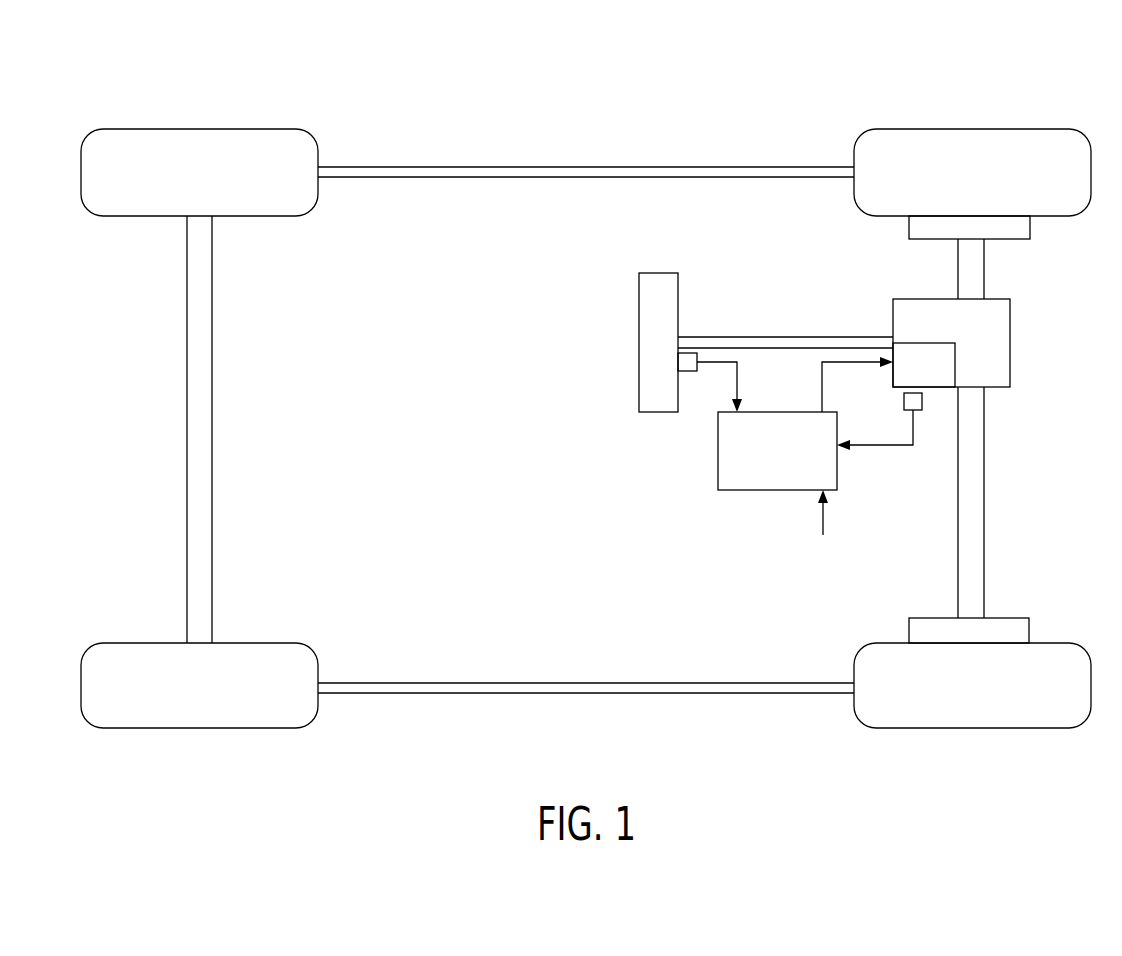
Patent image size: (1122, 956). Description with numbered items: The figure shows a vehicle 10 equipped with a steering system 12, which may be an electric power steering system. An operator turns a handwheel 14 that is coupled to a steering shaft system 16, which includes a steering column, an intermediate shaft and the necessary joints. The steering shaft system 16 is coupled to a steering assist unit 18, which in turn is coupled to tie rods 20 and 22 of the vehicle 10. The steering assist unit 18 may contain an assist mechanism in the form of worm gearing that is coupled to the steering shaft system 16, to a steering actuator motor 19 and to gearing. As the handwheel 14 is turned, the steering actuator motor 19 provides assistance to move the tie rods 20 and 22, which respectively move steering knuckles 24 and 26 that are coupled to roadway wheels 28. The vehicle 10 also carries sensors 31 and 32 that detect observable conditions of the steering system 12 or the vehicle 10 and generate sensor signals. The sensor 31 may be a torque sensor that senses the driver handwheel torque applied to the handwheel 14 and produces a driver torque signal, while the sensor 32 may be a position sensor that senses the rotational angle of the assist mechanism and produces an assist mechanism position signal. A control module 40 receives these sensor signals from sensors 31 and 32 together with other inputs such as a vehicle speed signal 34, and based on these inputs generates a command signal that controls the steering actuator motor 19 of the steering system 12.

The vehicle 10 is at (915, 97).
The steering system 12 is at (748, 292).
The handwheel 14 is at (659, 272).
The steering shaft system 16 is at (836, 336).
The steering assist unit 18 is at (1000, 321).
The steering actuator motor 19 is at (948, 378).
The tie rod 20 is at (988, 278).
The tie rod 22 is at (985, 518).
The steering knuckle 24 is at (909, 219).
The steering knuckle 26 is at (1007, 616).
The roadway wheel 28 is at (1020, 129).
The sensor 31 is at (693, 352).
The sensor 32 is at (922, 399).
The vehicle speed signal 34 is at (825, 526).
The control module 40 is at (718, 436).